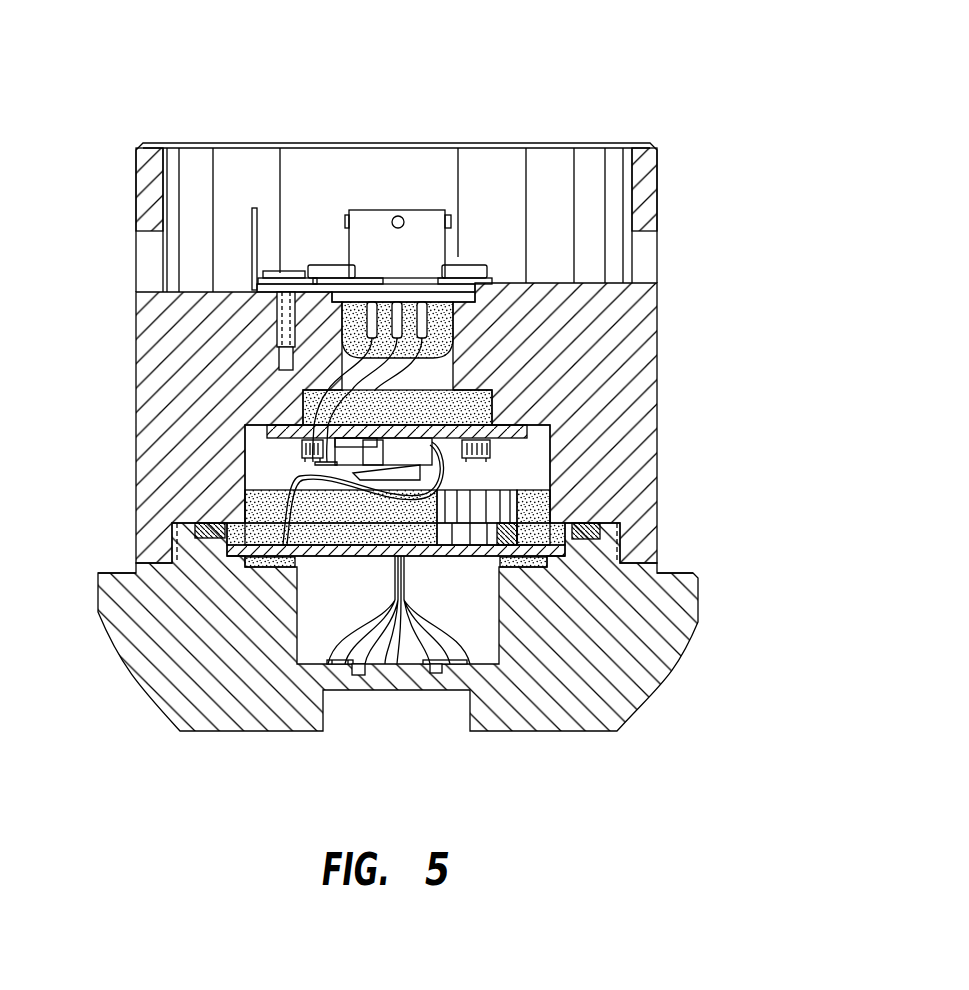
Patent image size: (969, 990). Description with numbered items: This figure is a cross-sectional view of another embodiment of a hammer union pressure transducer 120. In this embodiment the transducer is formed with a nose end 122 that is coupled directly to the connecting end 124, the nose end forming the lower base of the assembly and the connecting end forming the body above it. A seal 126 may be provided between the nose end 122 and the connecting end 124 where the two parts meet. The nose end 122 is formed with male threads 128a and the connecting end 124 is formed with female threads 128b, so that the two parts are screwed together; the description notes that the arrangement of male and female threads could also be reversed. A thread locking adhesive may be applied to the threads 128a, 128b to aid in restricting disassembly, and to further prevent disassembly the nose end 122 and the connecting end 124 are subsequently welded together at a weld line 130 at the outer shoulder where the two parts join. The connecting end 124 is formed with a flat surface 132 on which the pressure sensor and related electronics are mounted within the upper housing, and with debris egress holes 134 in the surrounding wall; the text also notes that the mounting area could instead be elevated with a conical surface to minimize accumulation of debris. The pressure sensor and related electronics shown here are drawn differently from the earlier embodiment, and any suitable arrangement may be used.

The hammer union pressure transducer 120 is at (518, 85).
The nose end 122 is at (640, 703).
The connecting end 124 is at (658, 308).
The seal 126 is at (203, 522).
The male threads 128a is at (620, 543).
The female threads 128b is at (620, 543).
The weld line 130 is at (127, 572).
The flat surface 132 is at (558, 280).
The debris egress holes 134 is at (658, 255).